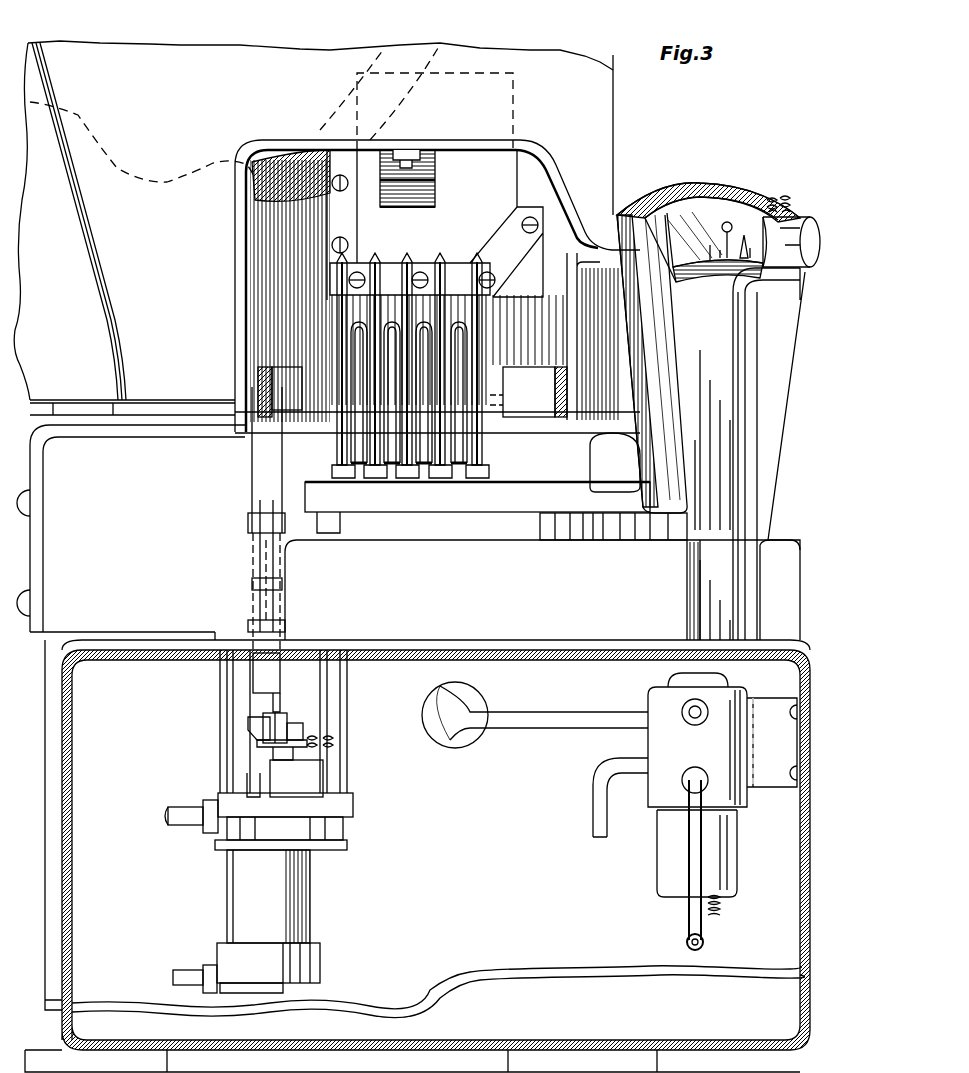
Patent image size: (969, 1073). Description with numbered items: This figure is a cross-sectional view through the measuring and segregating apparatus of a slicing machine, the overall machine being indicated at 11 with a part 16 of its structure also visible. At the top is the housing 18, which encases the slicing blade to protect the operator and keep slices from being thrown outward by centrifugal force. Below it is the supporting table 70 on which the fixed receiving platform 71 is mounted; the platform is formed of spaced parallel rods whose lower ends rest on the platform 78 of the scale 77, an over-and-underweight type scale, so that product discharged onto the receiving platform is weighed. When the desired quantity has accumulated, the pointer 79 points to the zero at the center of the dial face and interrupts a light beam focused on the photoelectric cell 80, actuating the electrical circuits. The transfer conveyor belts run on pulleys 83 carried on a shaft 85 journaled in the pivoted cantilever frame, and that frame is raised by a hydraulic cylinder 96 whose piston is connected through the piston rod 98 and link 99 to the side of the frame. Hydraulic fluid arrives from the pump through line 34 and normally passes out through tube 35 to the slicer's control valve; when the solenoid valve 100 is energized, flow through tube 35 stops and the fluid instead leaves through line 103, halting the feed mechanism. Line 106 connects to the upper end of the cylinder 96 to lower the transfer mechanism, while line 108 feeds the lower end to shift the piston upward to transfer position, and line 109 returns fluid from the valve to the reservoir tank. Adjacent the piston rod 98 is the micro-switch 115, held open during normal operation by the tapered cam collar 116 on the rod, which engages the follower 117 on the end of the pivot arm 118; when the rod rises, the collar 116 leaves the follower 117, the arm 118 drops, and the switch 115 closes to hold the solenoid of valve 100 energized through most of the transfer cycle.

The toaster 11 is at (355, 40).
The housing 16 is at (266, 180).
The housing 18 is at (172, 52).
The line 34 is at (593, 815).
The tube 35 is at (517, 722).
The supporting table 70 is at (670, 645).
The fixed receiving platform 71 is at (407, 262).
The scale 77 is at (671, 175).
The platform of the scale 78 is at (553, 494).
The pointer 79 is at (738, 232).
The photoelectric cell 80 is at (790, 215).
The pulleys 83 is at (462, 362).
The shaft 85 is at (495, 410).
The hydraulic cylinder 96 is at (233, 885).
The piston rod 98 is at (256, 600).
The link 99 is at (258, 472).
The solenoid valve 100 is at (733, 790).
The line 103 is at (703, 708).
The line 106 is at (183, 810).
The line 108 is at (188, 970).
The line 109 is at (705, 935).
The micro-switch 115 is at (312, 790).
The tapered cam collar 116 is at (250, 725).
The follower 117 is at (278, 714).
The pivot arm 118 is at (292, 726).